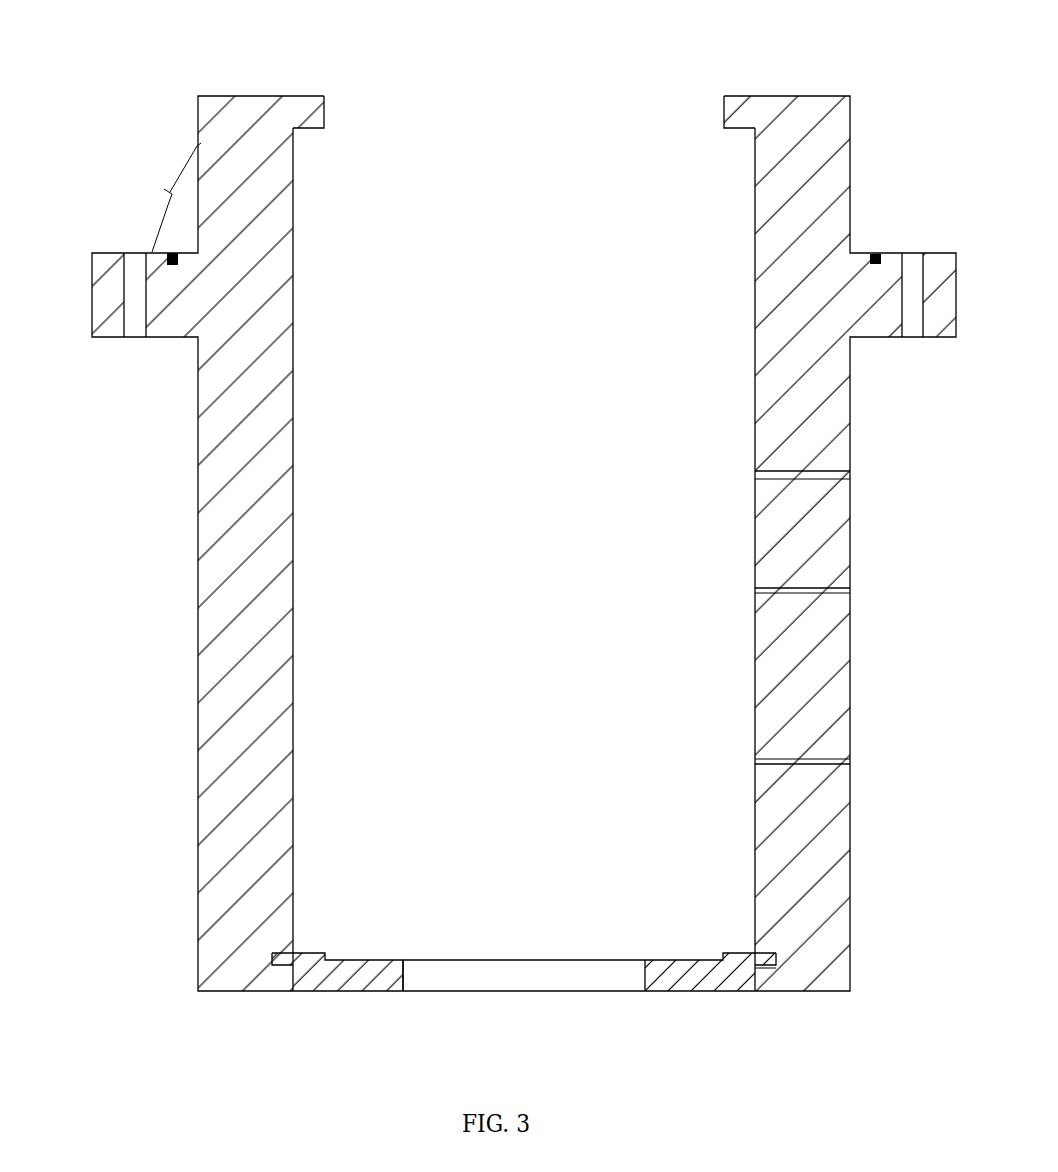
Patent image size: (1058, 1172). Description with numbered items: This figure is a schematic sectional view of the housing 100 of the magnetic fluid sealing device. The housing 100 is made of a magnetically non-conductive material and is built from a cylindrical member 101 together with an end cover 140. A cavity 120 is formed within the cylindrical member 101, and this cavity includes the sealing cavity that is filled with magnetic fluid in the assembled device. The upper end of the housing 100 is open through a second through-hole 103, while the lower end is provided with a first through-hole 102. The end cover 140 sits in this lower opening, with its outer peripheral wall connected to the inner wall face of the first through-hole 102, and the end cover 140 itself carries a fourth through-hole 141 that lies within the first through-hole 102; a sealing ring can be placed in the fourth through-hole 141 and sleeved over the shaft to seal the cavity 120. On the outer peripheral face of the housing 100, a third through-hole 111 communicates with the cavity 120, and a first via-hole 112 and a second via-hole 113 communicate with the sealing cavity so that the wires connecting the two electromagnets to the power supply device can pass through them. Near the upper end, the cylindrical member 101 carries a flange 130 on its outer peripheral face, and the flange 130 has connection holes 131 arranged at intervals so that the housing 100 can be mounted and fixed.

The housing 100 is at (160, 185).
The cylindrical member 101 is at (241, 156).
The first through-hole 102 is at (764, 977).
The second through-hole 103 is at (662, 110).
The third through-hole 111 is at (822, 764).
The first via-hole 112 is at (822, 591).
The second via-hole 113 is at (822, 476).
The cavity 120 is at (340, 436).
The flange 130 is at (113, 264).
The connection holes 131 is at (137, 320).
The end cover 140 is at (333, 984).
The fourth through-hole 141 is at (619, 987).